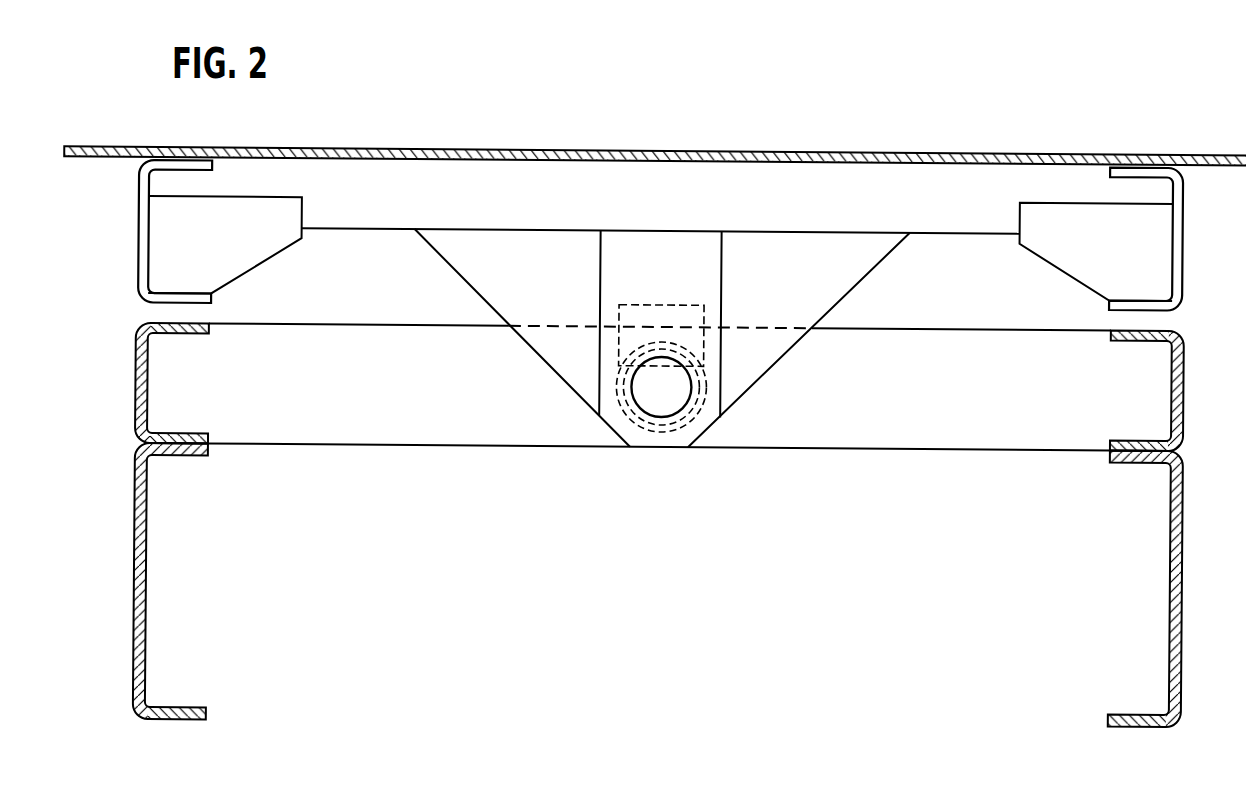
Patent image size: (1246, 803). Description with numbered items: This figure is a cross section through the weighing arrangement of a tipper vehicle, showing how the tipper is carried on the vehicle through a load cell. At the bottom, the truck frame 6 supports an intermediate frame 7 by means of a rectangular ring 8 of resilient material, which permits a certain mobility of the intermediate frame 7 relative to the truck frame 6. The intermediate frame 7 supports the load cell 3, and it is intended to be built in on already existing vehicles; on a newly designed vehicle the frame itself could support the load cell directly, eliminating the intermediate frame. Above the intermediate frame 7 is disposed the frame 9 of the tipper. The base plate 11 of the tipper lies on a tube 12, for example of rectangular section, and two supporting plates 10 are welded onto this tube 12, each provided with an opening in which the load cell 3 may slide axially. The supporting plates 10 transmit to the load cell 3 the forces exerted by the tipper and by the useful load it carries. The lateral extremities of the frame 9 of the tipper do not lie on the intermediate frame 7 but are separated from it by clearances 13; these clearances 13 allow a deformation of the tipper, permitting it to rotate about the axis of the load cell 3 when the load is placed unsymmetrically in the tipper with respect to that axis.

The load cell 3 is at (665, 397).
The truck frame 6 is at (143, 602).
The intermediate frame 7 is at (446, 425).
The rectangular ring 8 is at (145, 449).
The frame of the tipper 9 is at (143, 256).
The supporting plates 10 is at (630, 263).
The base plate 11 is at (503, 125).
The tube 12 is at (770, 182).
The clearances 13 is at (160, 311).